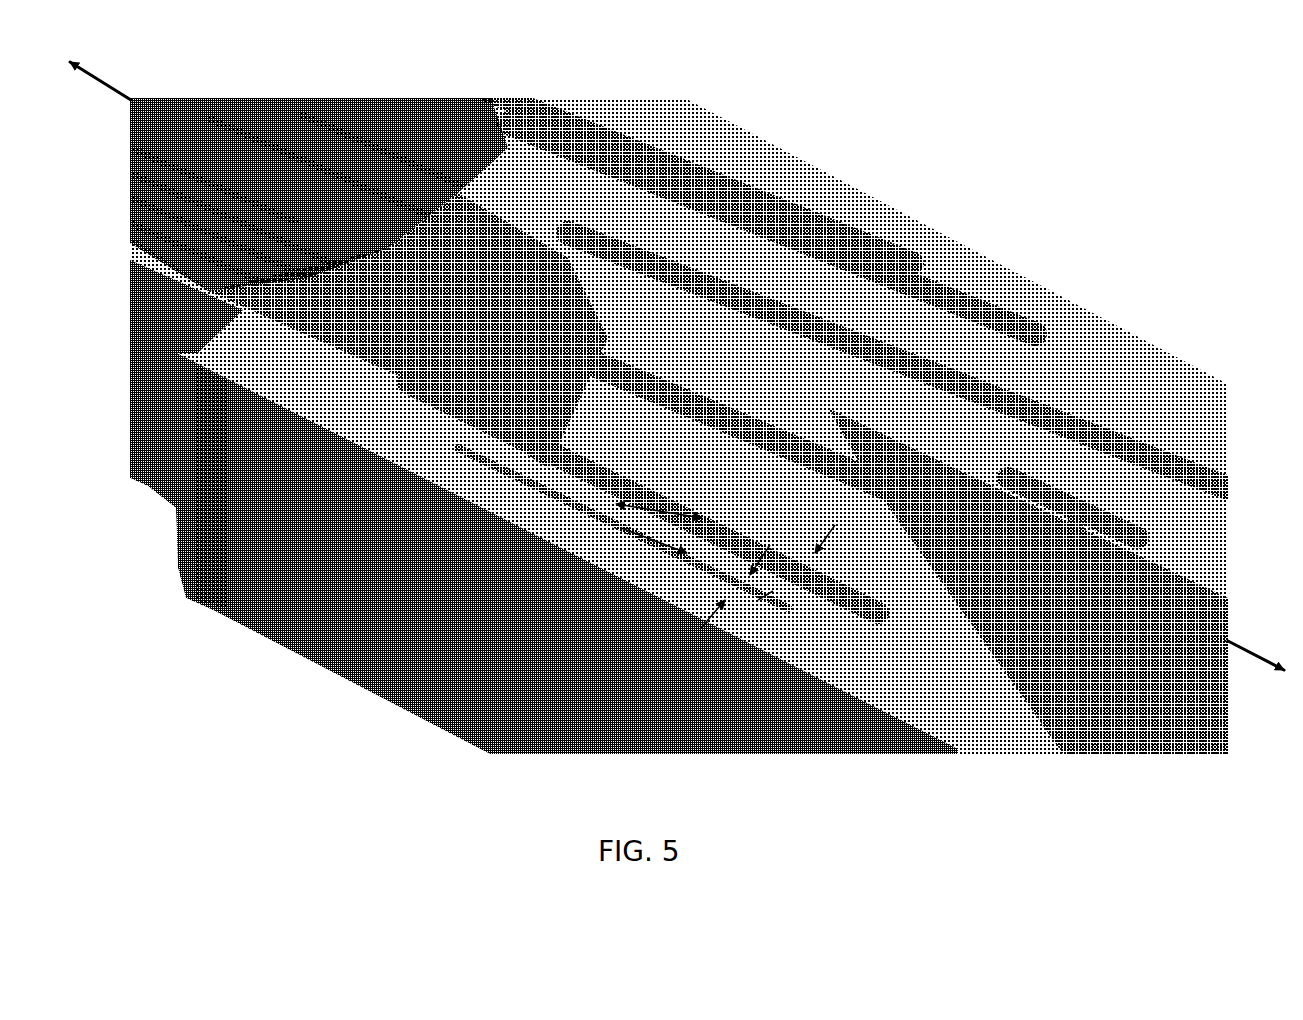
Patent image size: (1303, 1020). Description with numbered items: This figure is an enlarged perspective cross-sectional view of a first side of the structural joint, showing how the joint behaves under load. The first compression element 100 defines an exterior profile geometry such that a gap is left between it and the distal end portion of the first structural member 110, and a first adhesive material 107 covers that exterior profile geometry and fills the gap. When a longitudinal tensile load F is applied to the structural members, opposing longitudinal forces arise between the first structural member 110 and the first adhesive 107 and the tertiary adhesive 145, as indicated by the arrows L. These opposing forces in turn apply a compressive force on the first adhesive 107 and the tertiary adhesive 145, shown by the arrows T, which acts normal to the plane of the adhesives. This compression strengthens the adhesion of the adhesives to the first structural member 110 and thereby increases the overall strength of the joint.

The first compression element 100 is at (557, 165).
The first structural member 110 is at (683, 183).
The first adhesive material 107 is at (892, 315).
The tertiary adhesive 145 is at (987, 307).
The opposing longitudinal forces L is at (610, 518).
The compressive force T is at (773, 573).